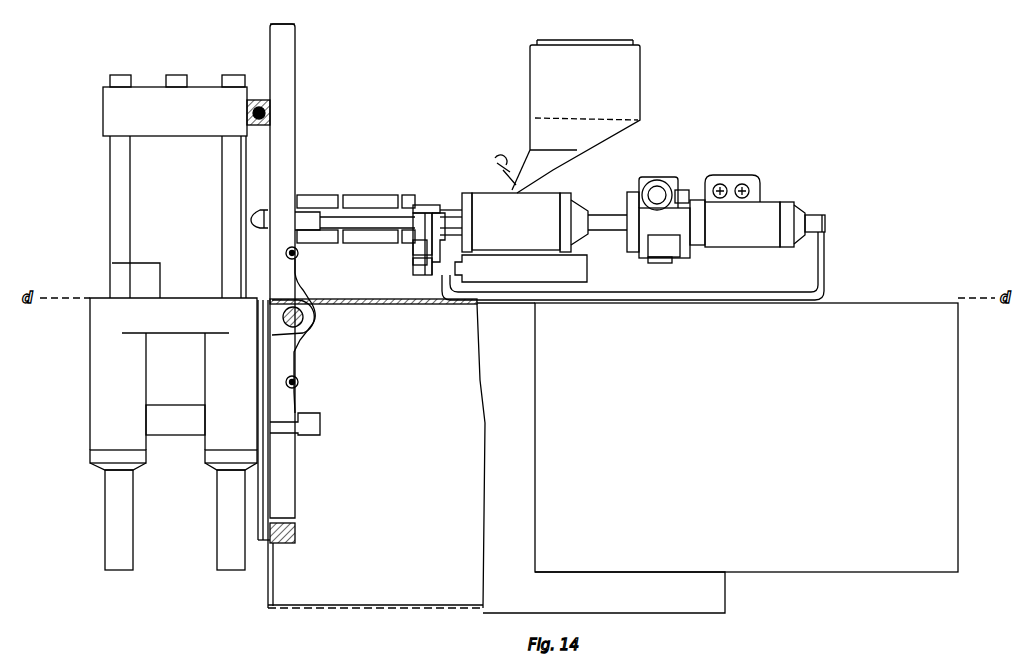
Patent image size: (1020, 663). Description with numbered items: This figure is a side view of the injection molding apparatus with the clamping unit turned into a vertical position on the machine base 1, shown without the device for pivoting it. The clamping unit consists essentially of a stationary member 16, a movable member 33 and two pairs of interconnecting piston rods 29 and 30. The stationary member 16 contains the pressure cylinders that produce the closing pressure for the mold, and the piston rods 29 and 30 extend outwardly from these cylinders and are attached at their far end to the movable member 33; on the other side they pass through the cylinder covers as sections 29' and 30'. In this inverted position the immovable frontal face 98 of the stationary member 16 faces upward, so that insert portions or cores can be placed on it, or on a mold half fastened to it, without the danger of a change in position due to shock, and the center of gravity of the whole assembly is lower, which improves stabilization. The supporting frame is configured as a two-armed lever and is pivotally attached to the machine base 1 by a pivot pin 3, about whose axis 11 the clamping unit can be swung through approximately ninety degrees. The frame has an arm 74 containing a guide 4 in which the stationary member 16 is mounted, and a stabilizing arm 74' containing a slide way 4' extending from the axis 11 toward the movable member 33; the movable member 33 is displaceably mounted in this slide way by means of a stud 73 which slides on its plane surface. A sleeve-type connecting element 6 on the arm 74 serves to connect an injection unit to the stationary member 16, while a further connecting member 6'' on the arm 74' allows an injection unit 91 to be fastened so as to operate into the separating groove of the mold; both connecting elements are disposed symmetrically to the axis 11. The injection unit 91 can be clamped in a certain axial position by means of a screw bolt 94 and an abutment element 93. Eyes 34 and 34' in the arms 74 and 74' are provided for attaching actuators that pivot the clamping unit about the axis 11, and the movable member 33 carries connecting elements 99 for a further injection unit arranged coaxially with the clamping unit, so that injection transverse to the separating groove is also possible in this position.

The movable member 33 is at (150, 105).
The connecting elements 99 is at (181, 75).
The slide way 4' is at (256, 26).
The stud 73 is at (273, 103).
The stabilizing arm 74' is at (326, 130).
The piston rod 29 is at (130, 217).
The piston rod 30 is at (72, 217).
The immovable frontal face 98 is at (160, 263).
The stationary member 16 is at (148, 312).
The piston rod section 30' is at (74, 520).
The piston rod section 29' is at (130, 520).
The connecting member 6'' is at (320, 192).
The abutment element 93 is at (372, 220).
The eye 34' is at (335, 261).
The pivot pin 3 is at (305, 322).
The pivot axis 11 is at (308, 330).
The eye 34 is at (333, 395).
The sleeve-type connecting element 6 is at (321, 432).
The arm 74 is at (325, 271).
The guide 4 is at (313, 420).
The machine base 1 is at (408, 306).
The injection unit 91 is at (548, 200).
The screw bolt 94 is at (824, 270).